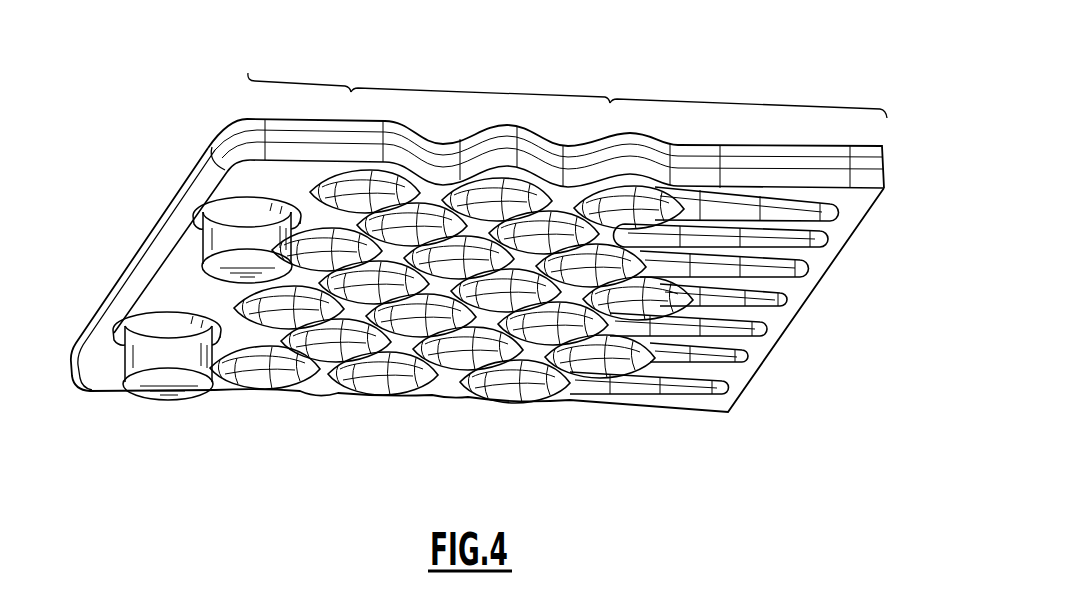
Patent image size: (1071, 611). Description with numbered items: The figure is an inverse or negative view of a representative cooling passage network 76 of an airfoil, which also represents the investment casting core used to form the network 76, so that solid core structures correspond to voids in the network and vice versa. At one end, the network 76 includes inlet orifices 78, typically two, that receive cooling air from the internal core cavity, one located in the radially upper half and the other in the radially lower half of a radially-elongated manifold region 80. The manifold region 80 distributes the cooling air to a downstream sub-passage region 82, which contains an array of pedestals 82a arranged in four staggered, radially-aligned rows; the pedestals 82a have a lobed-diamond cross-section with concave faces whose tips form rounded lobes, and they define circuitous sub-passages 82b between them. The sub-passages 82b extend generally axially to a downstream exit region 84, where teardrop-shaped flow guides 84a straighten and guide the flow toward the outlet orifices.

The cooling passage network 76 is at (78, 430).
The inlet orifice 78 is at (213, 263).
The manifold region 80 is at (298, 83).
The sub-passage region 82 is at (472, 92).
The pedestal 82a is at (325, 340).
The sub-passage 82b is at (293, 357).
The exit region 84 is at (745, 104).
The flow guide 84a is at (529, 387).